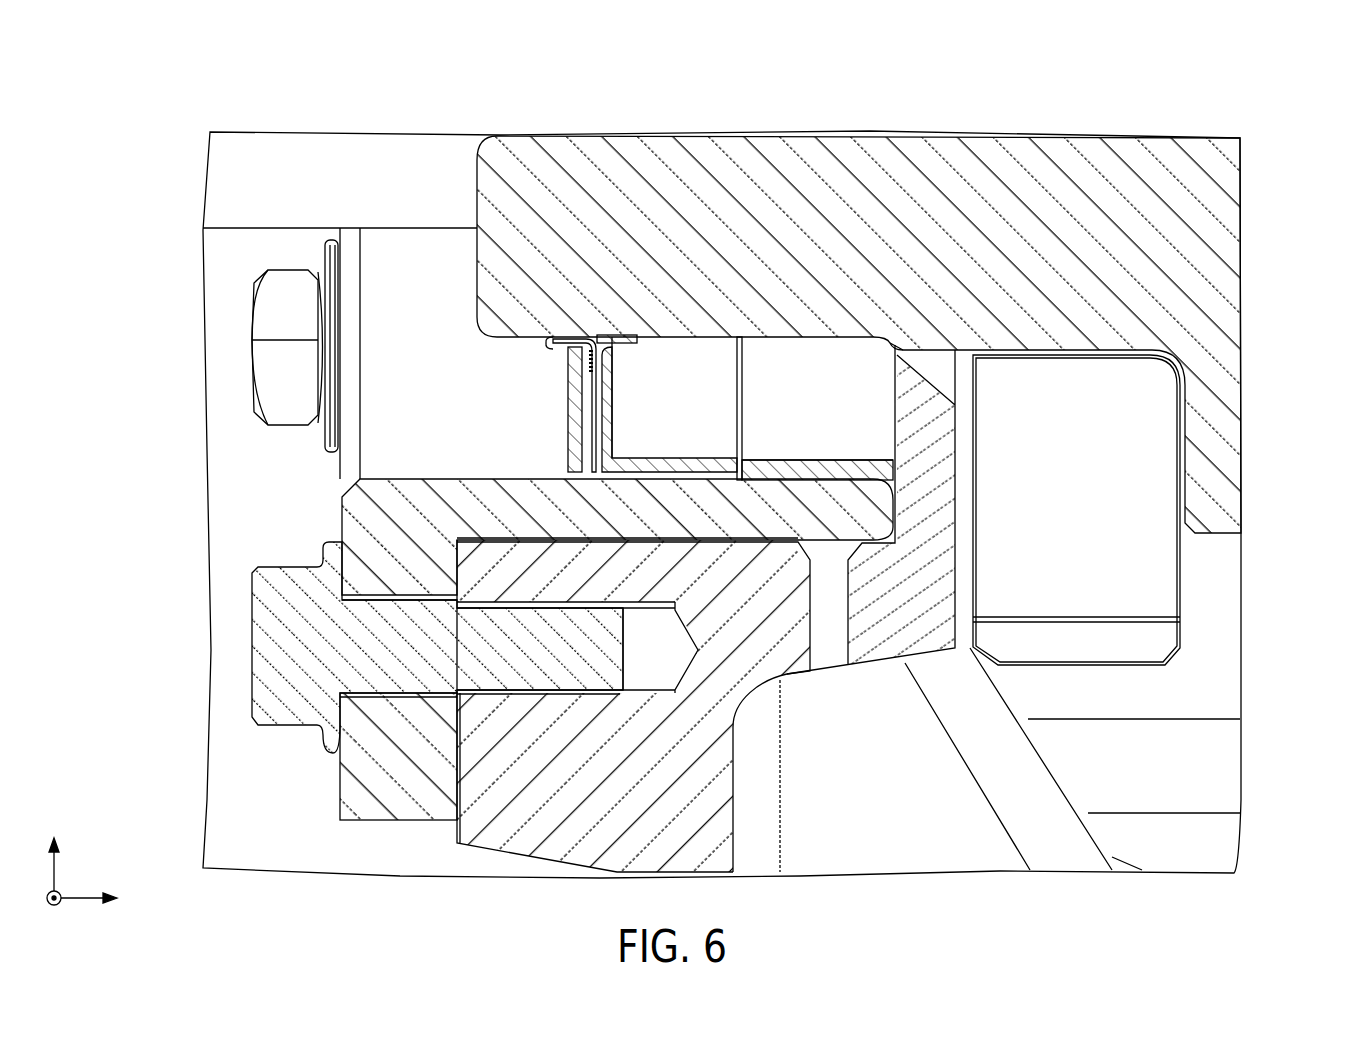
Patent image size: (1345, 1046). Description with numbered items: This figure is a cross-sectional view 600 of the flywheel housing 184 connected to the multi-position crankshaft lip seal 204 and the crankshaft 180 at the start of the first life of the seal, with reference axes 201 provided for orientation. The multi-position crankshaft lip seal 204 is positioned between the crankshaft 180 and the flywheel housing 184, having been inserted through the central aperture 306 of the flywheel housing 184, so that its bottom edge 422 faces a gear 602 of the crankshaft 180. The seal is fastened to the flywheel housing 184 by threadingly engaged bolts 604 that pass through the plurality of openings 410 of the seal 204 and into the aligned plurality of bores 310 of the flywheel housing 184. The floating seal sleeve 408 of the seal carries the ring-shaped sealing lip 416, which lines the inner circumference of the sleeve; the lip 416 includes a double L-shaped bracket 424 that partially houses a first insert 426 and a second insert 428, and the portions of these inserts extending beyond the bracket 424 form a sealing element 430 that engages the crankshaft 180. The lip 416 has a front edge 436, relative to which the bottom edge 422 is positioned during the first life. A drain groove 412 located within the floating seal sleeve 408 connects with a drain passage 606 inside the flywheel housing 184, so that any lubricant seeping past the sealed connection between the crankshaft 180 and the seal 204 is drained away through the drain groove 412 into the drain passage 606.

The cross-sectional view 600 is at (1275, 121).
The central aperture 306 is at (350, 188).
The crankshaft 180 is at (900, 235).
The multi-position crankshaft lip seal 204 is at (348, 468).
The bolts 604 is at (275, 391).
The floating seal sleeve 408 is at (448, 410).
The openings 410 is at (312, 639).
The bores 310 is at (456, 649).
The flywheel housing 184 is at (603, 768).
The drain passage 606 is at (850, 578).
The gear 602 is at (1055, 500).
The sealing lip 416 is at (568, 422).
The sealing element 430 is at (550, 397).
The second insert 428 is at (585, 337).
The double L-shaped bracket 424 is at (612, 383).
The first insert 426 is at (614, 335).
The front edge 436 is at (745, 372).
The drain groove 412 is at (870, 470).
The bottom edge 422 is at (916, 344).
The reference axes 201 is at (92, 822).